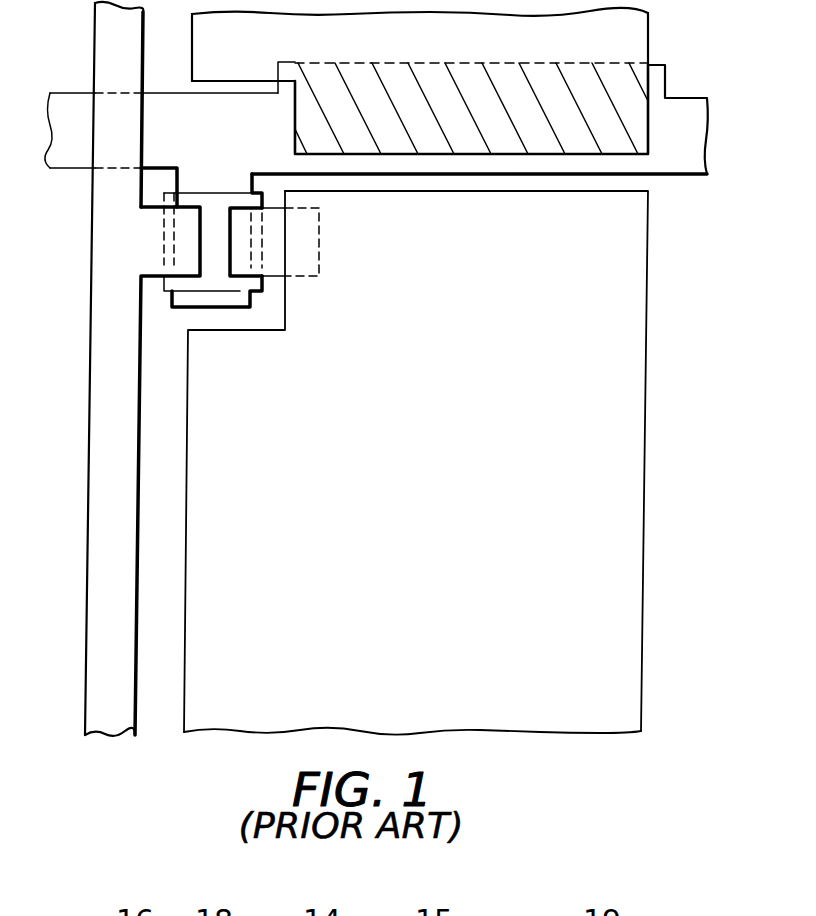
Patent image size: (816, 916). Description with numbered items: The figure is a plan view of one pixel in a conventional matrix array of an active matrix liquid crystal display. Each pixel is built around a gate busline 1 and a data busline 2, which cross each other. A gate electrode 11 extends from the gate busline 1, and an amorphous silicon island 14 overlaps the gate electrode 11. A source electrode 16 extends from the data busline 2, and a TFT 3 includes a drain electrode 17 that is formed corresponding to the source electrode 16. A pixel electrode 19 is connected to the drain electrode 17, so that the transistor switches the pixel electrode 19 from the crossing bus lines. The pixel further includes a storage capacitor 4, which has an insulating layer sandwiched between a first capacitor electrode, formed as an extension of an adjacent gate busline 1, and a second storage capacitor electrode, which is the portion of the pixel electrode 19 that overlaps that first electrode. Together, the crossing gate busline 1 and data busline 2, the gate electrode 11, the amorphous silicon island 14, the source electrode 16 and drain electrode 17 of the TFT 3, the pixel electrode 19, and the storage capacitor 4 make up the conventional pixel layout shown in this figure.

The gate busline 1 is at (692, 122).
The data busline 2 is at (114, 383).
The TFT 3 is at (190, 165).
The storage capacitor 4 is at (610, 94).
The gate electrode 11 is at (196, 302).
The amorphous silicon island 14 is at (209, 270).
The source electrode 16 is at (184, 227).
The drain electrode 17 is at (248, 262).
The pixel electrode 19 is at (633, 248).